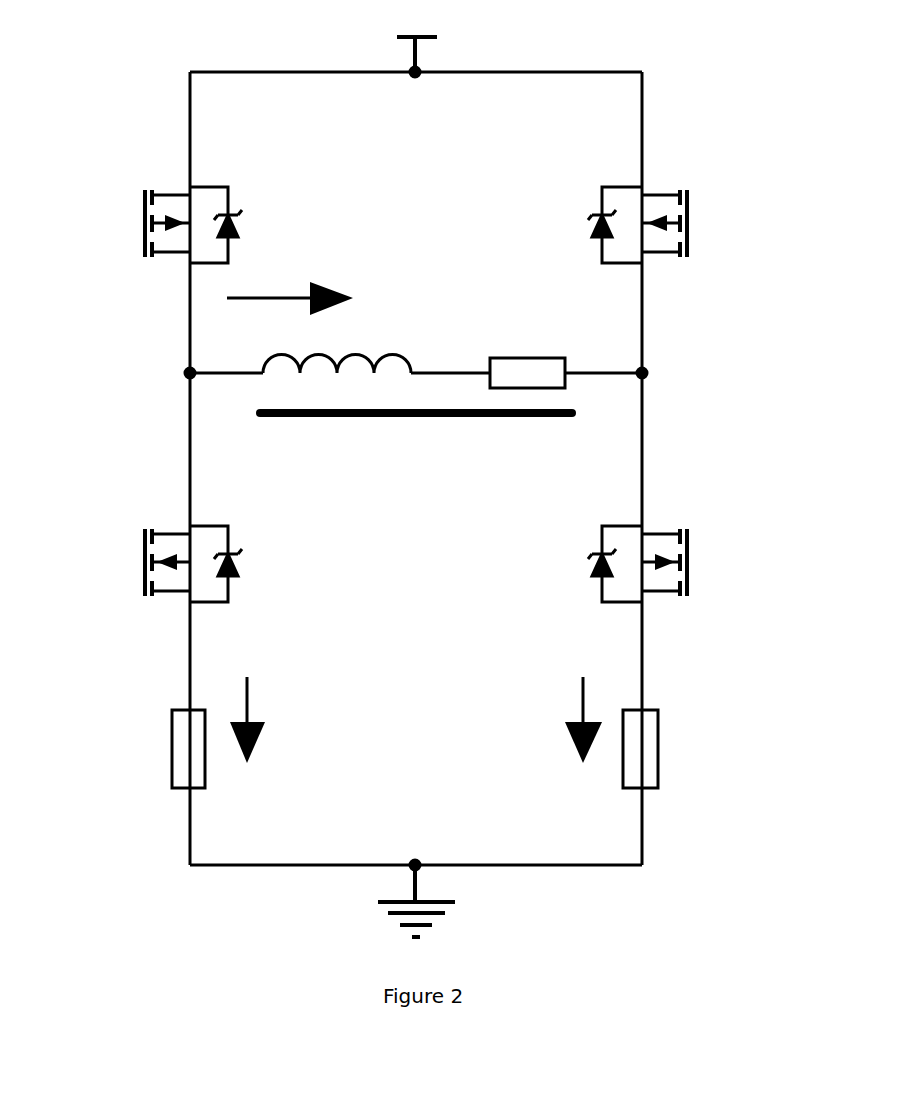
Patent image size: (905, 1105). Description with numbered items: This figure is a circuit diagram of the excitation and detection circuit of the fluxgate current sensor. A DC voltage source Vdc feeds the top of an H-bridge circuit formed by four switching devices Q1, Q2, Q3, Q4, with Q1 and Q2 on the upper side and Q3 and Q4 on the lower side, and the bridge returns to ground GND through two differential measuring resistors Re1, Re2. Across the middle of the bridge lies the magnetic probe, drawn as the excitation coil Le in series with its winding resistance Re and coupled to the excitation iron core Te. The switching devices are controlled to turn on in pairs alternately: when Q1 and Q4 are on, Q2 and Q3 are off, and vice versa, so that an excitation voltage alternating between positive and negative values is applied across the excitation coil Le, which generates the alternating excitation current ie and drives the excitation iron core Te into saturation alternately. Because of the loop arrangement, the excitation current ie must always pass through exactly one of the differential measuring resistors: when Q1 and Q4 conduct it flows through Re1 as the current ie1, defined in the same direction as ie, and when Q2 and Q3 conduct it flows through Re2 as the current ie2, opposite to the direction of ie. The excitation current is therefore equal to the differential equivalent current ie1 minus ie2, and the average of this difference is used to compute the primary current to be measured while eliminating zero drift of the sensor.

The DC voltage source Vdc is at (415, 40).
The ground GND is at (416, 919).
The switching device Q1 is at (145, 223).
The switching device Q2 is at (687, 223).
The switching device Q3 is at (145, 562).
The switching device Q4 is at (687, 562).
The excitation coil Le is at (337, 348).
The excitation coil resistance Re is at (527, 359).
The excitation iron core Te is at (416, 439).
The differential measuring resistor 1 Re1 is at (673, 749).
The differential measuring resistor 2 Re2 is at (151, 749).
The excitation current ie is at (290, 318).
The current flowing through differential measuring resistor 1 ie1 is at (600, 711).
The current flowing through differential measuring resistor 2 ie2 is at (237, 711).